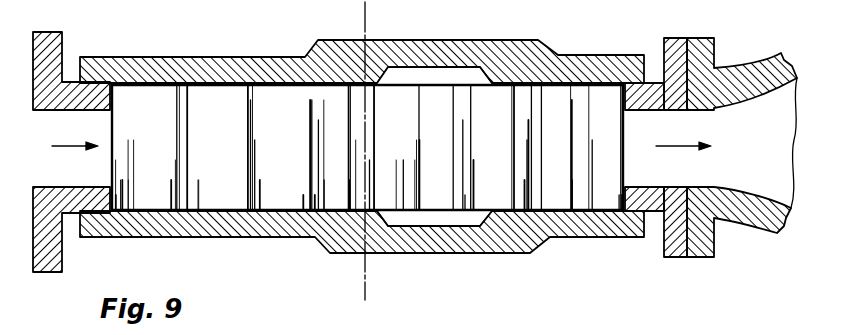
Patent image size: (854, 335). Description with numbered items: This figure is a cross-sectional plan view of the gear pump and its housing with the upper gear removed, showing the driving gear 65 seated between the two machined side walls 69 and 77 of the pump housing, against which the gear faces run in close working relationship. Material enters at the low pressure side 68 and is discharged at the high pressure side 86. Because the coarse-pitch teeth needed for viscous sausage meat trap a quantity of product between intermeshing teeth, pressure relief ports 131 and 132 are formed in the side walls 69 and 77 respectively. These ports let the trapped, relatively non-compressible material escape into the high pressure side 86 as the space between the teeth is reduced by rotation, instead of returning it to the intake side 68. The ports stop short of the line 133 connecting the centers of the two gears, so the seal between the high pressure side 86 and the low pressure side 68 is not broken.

The driving gear 65 is at (295, 200).
The low pressure side 68 is at (76, 168).
The wall 69 is at (522, 57).
The wall 77 is at (528, 232).
The high pressure side 86 is at (712, 170).
The pressure relief port 131 is at (410, 72).
The pressure relief port 132 is at (455, 220).
The line connecting the centers of the two gears 133 is at (358, 269).